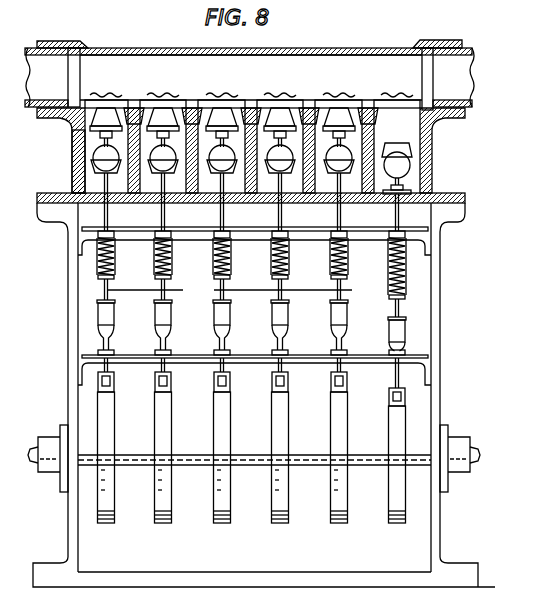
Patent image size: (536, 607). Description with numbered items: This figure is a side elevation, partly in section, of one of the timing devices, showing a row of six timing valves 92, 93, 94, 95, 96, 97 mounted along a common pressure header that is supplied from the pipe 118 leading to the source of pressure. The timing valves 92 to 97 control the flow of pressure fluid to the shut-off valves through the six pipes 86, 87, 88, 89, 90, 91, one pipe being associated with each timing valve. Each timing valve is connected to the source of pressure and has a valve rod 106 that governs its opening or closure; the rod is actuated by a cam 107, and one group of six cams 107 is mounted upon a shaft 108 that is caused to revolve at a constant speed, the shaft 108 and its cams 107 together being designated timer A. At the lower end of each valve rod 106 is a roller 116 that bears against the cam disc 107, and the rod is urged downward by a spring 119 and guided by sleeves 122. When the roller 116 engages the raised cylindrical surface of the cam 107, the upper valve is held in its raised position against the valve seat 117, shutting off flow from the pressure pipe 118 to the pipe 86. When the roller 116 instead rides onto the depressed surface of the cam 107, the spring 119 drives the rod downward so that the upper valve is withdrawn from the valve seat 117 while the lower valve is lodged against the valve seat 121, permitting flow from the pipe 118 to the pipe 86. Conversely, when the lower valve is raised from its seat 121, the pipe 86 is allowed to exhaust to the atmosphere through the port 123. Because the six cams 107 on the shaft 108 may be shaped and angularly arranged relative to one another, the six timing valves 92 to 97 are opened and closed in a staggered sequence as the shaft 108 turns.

The pipe 86 is at (92, 152).
The pipe 87 is at (172, 160).
The pipe 88 is at (231, 160).
The pipe 89 is at (289, 160).
The pipe 90 is at (348, 160).
The pipe 91 is at (414, 165).
The timing valve 92 is at (106, 88).
The timing valve 93 is at (163, 88).
The timing valve 94 is at (221, 88).
The timing valve 95 is at (280, 88).
The timing valve 96 is at (338, 88).
The timing valve 97 is at (397, 88).
The valve rod 106 is at (230, 289).
The cam 107 is at (214, 520).
The shaft 108 is at (253, 452).
The roller 116 is at (115, 382).
The valve seat 117 is at (78, 117).
The pipe 118 is at (124, 48).
The spring 119 is at (116, 254).
The valve seat 121 is at (90, 190).
The sleeves 122 is at (116, 231).
The port 123 is at (100, 203).